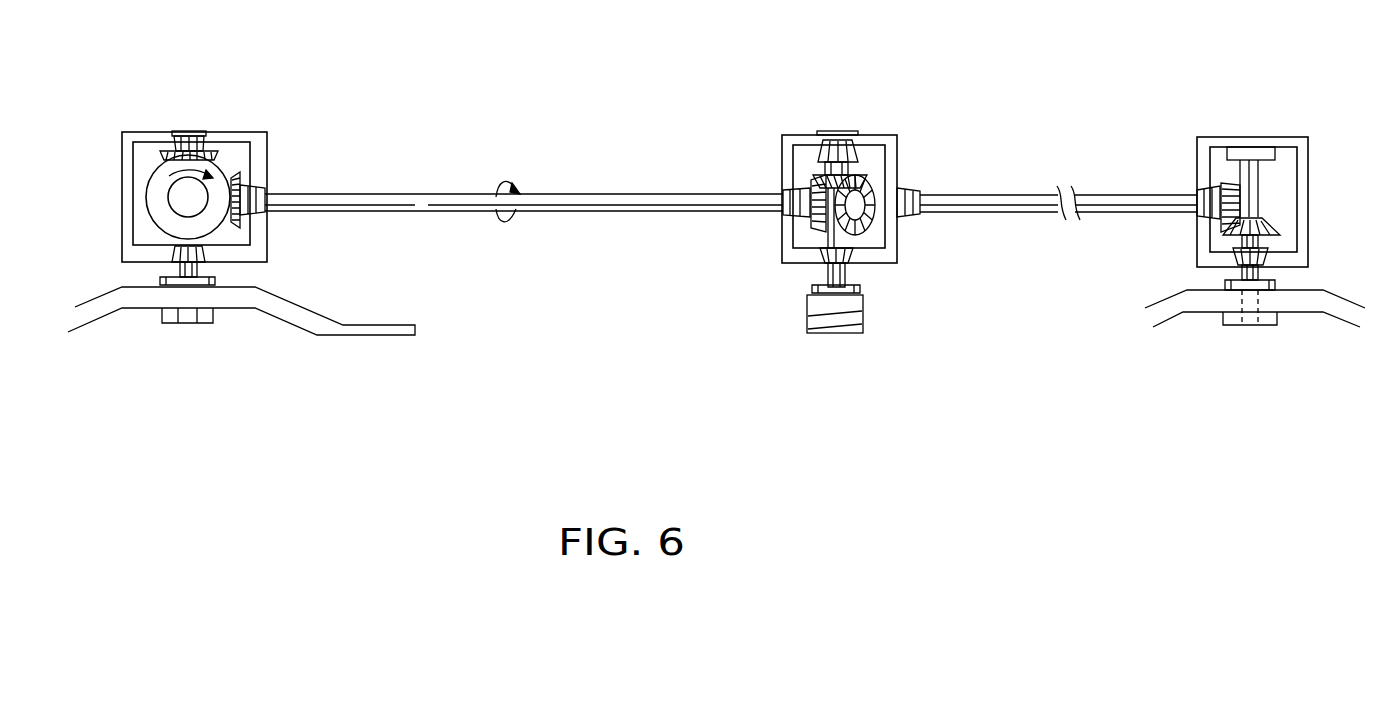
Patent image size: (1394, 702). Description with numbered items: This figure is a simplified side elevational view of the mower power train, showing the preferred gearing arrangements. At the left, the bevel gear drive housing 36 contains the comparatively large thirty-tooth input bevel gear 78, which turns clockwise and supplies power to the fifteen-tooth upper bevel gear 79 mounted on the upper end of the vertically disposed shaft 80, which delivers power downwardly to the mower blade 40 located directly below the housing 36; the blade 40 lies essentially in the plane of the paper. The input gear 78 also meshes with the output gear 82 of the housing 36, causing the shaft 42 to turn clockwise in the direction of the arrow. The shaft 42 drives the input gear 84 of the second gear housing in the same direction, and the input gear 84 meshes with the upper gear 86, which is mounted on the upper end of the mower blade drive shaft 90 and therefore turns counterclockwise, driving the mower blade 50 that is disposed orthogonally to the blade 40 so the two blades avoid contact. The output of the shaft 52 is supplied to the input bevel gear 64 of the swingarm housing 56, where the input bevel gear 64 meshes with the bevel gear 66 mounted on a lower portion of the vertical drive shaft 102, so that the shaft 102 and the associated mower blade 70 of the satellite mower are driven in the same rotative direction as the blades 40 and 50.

The bevel gear drive housing 36 is at (148, 138).
The upper bevel gear 79 is at (212, 147).
The input bevel gear 78 is at (223, 173).
The output gear 82 is at (240, 187).
The vertically disposed shaft 80 is at (203, 267).
The mower blade 40 is at (327, 327).
The shaft 42 is at (590, 198).
The upper gear 86 is at (857, 175).
The shaft 52 is at (992, 200).
The input gear 84 is at (810, 220).
The mower blade drive shaft 90 is at (842, 240).
The mower blade 50 is at (818, 327).
The swingarm housing 56 is at (1262, 140).
The input bevel gear 64 is at (1223, 180).
The bevel gear 66 is at (1273, 225).
The vertical drive shaft 102 is at (1243, 272).
The mower blade 70 is at (1170, 313).